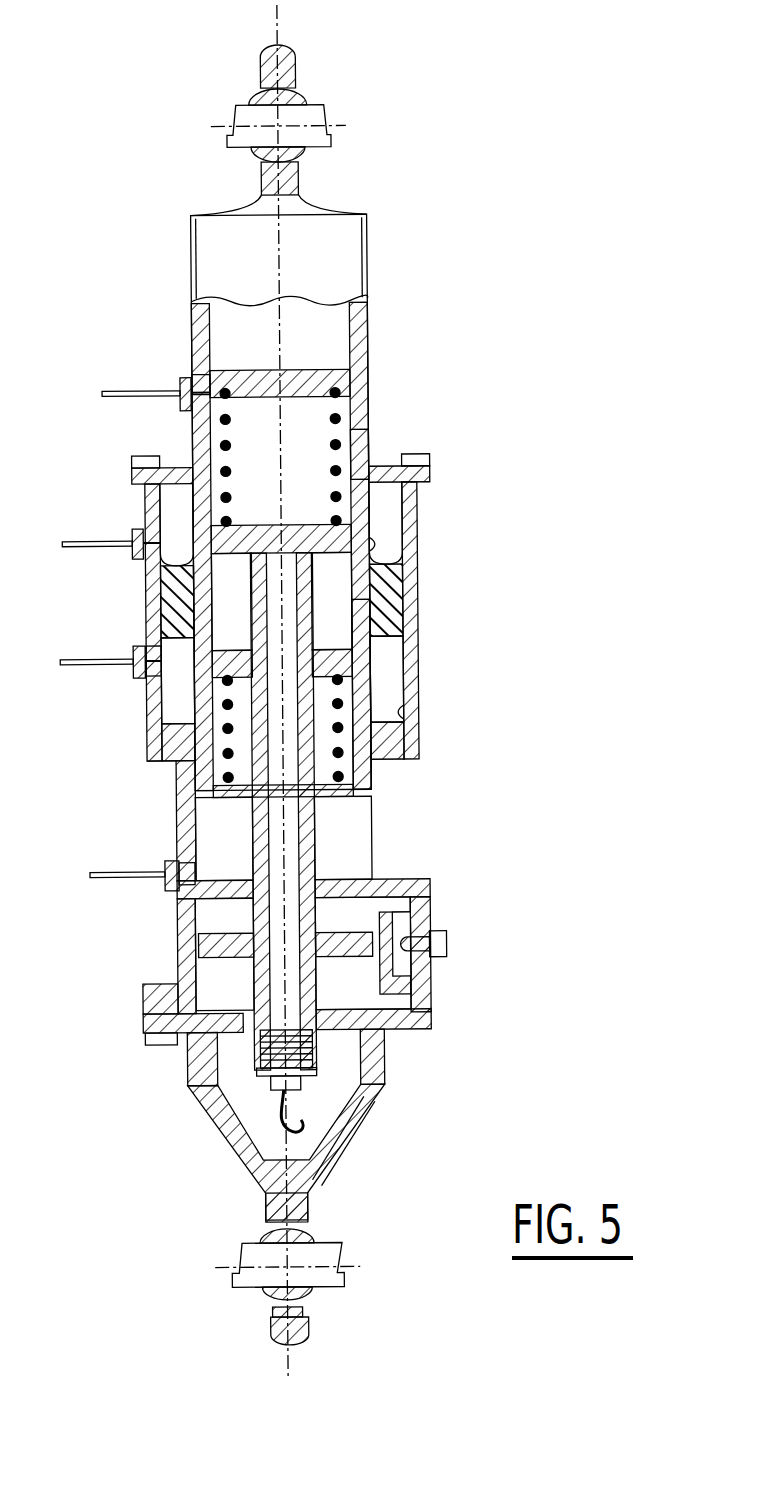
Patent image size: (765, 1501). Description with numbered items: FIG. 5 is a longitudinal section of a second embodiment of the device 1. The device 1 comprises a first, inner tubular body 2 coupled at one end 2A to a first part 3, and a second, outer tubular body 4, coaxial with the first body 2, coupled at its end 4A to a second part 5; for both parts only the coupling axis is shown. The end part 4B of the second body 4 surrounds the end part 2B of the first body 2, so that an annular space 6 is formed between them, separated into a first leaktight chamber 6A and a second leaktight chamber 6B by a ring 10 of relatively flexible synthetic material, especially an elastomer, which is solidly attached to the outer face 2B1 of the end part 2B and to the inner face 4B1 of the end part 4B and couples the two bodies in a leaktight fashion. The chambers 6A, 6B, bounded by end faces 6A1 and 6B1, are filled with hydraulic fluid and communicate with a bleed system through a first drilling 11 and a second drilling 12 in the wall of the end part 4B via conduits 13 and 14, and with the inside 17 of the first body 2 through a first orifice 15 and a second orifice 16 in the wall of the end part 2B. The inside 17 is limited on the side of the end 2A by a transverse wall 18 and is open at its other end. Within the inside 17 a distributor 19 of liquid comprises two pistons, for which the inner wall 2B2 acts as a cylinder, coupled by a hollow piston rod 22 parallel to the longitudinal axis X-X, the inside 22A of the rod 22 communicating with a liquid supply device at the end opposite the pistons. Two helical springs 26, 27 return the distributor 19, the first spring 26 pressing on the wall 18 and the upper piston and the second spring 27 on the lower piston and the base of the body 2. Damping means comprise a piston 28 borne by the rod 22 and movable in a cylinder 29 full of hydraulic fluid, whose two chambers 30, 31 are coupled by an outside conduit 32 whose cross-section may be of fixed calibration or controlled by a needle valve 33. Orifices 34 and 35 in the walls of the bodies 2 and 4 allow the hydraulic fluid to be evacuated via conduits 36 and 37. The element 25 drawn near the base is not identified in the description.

The device 1 is at (160, 264).
The first inner tubular body 2 is at (367, 352).
The end of first body 2A is at (246, 92).
The end part of first body 2B is at (378, 655).
The outer face of end part 2B 2B1 is at (172, 705).
The inner wall of first body 2B2 is at (347, 453).
The first part 3 is at (308, 118).
The second outer tubular body 4 is at (372, 1100).
The end of second body 4A is at (256, 1232).
The end part of second body 4B is at (140, 757).
The inner face of end part 4B 4B1 is at (392, 545).
The second part 5 is at (325, 1256).
The annular space 6 is at (158, 566).
The first leaktight chamber 6A is at (388, 517).
The end face of first chamber 6A1 is at (410, 490).
The second leaktight chamber 6B is at (388, 662).
The end face of second chamber 6B1 is at (397, 713).
The ring of flexible synthetic material 10 is at (155, 590).
The first drilling 11 is at (143, 512).
The second drilling 12 is at (156, 650).
The conduit 13 is at (86, 536).
The conduit 14 is at (82, 656).
The first orifice 15 is at (210, 538).
The second orifice 16 is at (205, 660).
The inside of first body 17 is at (249, 457).
The transverse wall 18 is at (272, 386).
The distributor of liquid 19 is at (243, 775).
The piston rod 22 is at (307, 823).
The inside of piston rod 22A is at (283, 842).
The hose 25 is at (290, 1115).
The first helical spring 26 is at (340, 415).
The second helical spring 27 is at (343, 753).
The damping piston 28 is at (208, 940).
The damping cylinder 29 is at (170, 960).
The chamber of damping cylinder 30 is at (402, 881).
The chamber of damping cylinder 31 is at (380, 1036).
The conduit 32 is at (398, 985).
The needle valve 33 is at (438, 945).
The orifice 34 is at (195, 372).
The orifice 35 is at (174, 866).
The conduit 36 is at (127, 389).
The conduit 37 is at (105, 872).